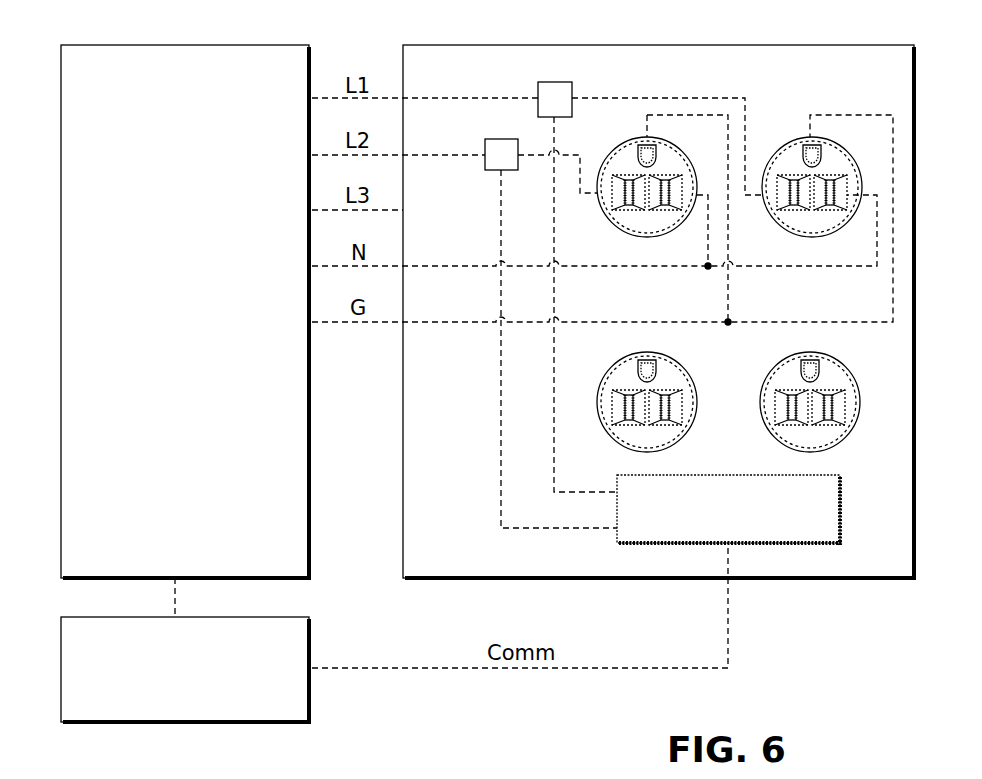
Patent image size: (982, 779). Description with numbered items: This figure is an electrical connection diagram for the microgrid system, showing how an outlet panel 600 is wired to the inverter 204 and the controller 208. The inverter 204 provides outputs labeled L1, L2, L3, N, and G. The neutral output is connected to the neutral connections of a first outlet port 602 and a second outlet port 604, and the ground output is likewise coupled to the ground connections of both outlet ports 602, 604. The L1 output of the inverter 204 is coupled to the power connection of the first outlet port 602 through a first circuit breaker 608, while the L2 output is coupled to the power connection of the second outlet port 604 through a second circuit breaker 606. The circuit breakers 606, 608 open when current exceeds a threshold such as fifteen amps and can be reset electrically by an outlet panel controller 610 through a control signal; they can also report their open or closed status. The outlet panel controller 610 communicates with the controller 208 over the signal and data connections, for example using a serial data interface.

The inverter 204 is at (60, 312).
The controller 208 is at (60, 671).
The outlet panel 600 is at (780, 45).
The first outlet port 602 is at (808, 237).
The second outlet port 604 is at (645, 237).
The second circuit breaker 606 is at (501, 139).
The first circuit breaker 608 is at (554, 82).
The outlet panel controller 610 is at (729, 510).